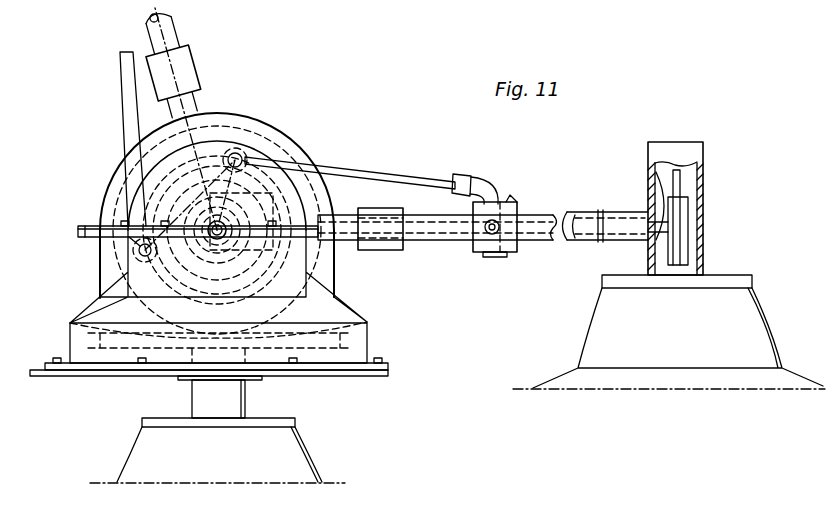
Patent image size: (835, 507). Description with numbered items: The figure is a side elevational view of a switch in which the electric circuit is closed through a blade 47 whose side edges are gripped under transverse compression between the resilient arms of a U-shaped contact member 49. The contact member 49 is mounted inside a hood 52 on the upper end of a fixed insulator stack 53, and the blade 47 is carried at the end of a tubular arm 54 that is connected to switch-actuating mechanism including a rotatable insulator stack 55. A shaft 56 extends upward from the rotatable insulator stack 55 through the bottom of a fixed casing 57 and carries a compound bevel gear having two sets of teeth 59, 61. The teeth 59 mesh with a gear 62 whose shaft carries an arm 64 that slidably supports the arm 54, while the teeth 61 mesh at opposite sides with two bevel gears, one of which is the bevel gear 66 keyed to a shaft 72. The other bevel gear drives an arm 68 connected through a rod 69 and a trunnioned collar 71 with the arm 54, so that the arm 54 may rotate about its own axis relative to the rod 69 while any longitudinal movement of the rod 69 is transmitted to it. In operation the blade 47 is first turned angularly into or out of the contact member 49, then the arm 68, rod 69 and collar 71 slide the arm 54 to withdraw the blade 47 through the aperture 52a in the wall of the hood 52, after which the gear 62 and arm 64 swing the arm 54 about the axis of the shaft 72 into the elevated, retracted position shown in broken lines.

The blade 47 is at (655, 182).
The U-shaped contact member 49 is at (690, 215).
The hood 52 is at (703, 146).
The aperture 52a is at (648, 206).
The fixed insulator stack 53 is at (750, 298).
The arm 54 is at (190, 40).
The rotatable insulator stack 55 is at (295, 452).
The shaft 56 is at (215, 382).
The fixed casing 57 is at (388, 376).
The teeth 59 is at (375, 333).
The teeth 61 is at (340, 298).
The gear 62 is at (262, 148).
The arm 64 is at (368, 210).
The bevel gear 66 is at (290, 158).
The arm 68 is at (212, 185).
The rod 69 is at (120, 124).
The trunnioned collar 71 is at (482, 254).
The shaft 72 is at (155, 255).